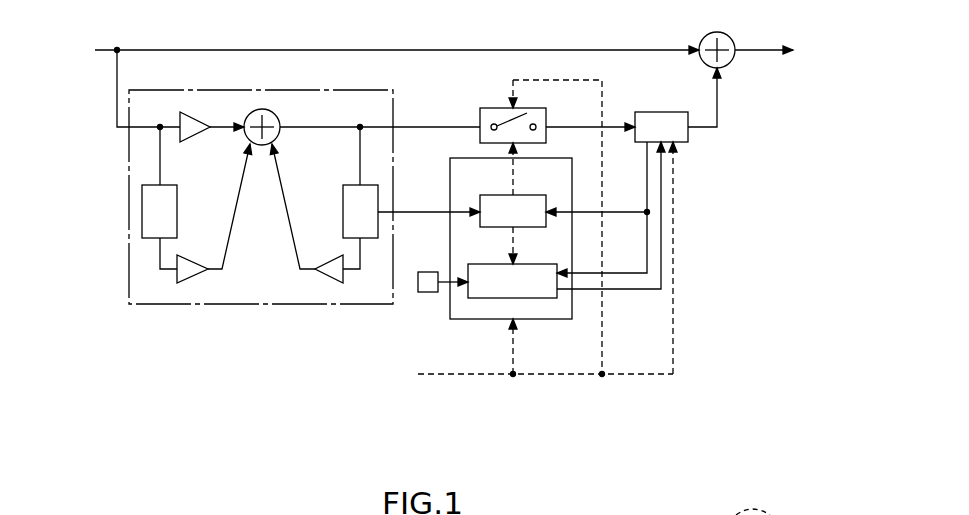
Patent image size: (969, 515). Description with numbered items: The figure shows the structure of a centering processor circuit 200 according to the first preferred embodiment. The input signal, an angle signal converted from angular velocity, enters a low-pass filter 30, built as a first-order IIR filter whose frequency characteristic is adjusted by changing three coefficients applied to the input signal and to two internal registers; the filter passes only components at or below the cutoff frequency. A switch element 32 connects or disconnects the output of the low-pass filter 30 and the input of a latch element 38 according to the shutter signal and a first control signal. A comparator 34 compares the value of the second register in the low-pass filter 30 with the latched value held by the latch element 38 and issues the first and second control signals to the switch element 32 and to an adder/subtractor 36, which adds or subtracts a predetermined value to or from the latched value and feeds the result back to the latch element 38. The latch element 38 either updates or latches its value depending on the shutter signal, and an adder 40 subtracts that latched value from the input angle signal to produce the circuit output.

The low-pass filter 30 is at (163, 304).
The switch element 32 is at (495, 108).
The comparator 34 is at (495, 195).
The adder/subtractor 36 is at (492, 264).
The latch element 38 is at (645, 112).
The adder 40 is at (727, 36).
The centering processor circuit 200 is at (455, 446).